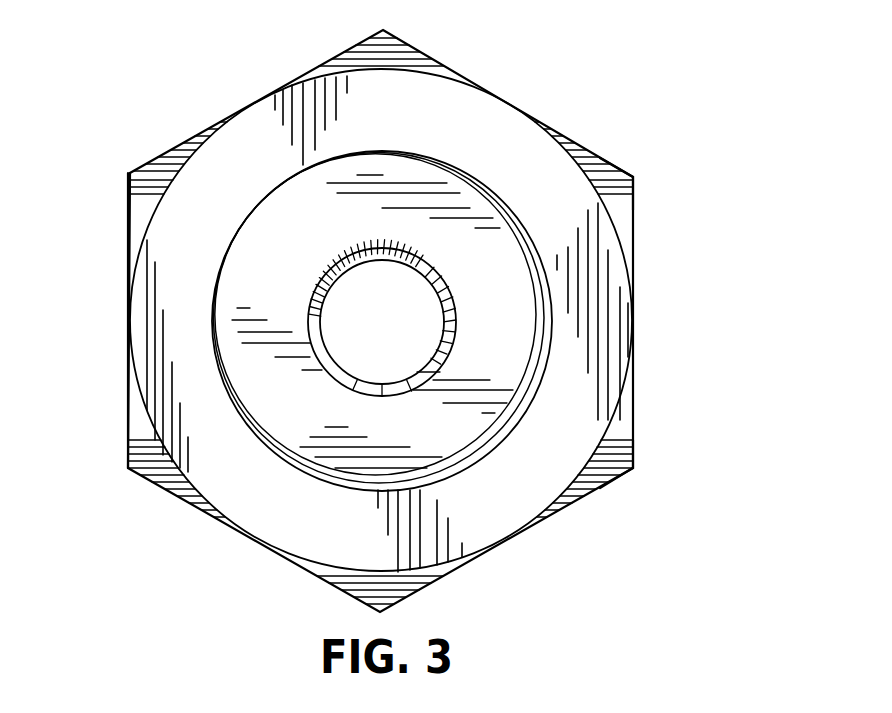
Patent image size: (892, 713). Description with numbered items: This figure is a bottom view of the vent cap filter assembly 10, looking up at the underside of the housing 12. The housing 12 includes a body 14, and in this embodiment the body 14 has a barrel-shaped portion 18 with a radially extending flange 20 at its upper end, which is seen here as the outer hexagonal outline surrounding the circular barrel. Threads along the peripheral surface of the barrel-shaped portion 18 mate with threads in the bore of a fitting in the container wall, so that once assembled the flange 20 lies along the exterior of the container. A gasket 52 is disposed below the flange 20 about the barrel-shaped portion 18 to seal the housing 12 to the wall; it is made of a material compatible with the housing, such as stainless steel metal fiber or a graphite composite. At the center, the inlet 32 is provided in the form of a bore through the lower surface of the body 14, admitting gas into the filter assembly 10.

The filter assembly 10 is at (562, 95).
The housing 12 is at (636, 465).
The body 14 is at (633, 178).
The barrel-shaped portion 18 is at (213, 292).
The flange 20 is at (620, 429).
The inlet 32 is at (370, 262).
The gasket 52 is at (128, 417).